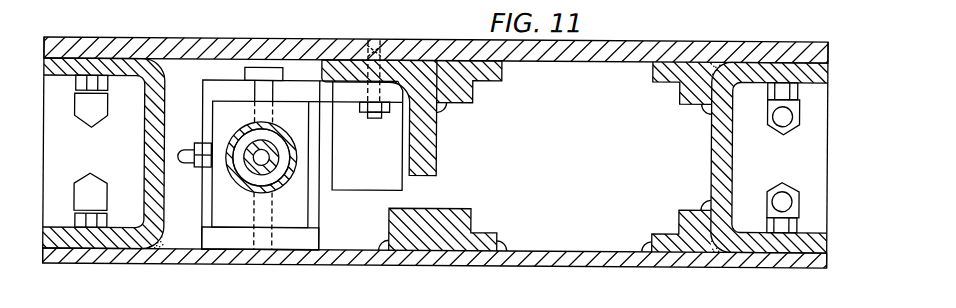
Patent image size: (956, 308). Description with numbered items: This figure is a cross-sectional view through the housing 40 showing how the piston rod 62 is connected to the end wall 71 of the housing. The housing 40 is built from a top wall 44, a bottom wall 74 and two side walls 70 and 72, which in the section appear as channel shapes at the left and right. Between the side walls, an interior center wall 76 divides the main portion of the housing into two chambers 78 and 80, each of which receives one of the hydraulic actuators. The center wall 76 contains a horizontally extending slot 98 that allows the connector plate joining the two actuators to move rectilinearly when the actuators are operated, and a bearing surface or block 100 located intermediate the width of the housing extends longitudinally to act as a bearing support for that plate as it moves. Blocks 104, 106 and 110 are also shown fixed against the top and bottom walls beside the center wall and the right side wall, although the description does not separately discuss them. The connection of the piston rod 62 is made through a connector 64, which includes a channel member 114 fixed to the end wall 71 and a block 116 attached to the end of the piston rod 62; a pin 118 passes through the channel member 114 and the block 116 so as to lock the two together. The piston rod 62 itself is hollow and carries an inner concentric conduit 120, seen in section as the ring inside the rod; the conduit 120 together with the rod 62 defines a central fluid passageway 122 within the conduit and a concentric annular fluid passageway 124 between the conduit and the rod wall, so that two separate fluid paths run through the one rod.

The housing 40 is at (152, 33).
The top wall 44 is at (418, 42).
The bottom wall 74 is at (537, 256).
The side wall 70 is at (155, 139).
The end wall 71 is at (182, 94).
The side wall 72 is at (733, 152).
The chamber 78 is at (187, 208).
The chamber 80 is at (590, 158).
The connector 64 is at (232, 80).
The channel member 114 is at (302, 86).
The block 116 is at (280, 216).
The pin 118 is at (265, 66).
The piston rod 62 is at (242, 188).
The inner concentric conduit 120 is at (280, 148).
The central fluid passageway 122 is at (265, 158).
The concentric annular fluid passageway 124 is at (276, 175).
The interior center wall 76 is at (428, 135).
The horizontally extending slot 98 is at (428, 187).
The bearing surface or block 100 is at (473, 229).
The upper spacer block 104 is at (478, 88).
The upper spacer block 106 is at (690, 78).
The lower spacer block 110 is at (690, 232).